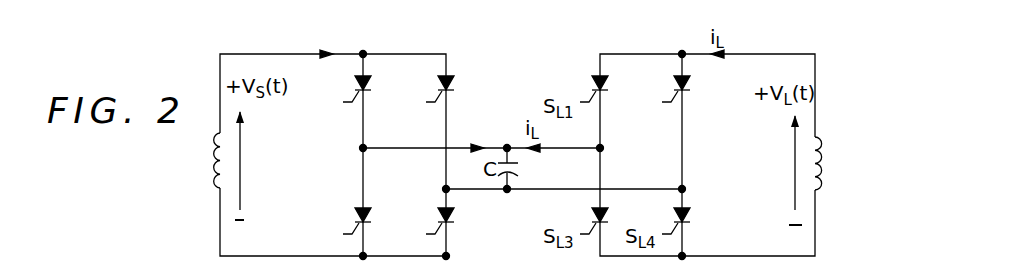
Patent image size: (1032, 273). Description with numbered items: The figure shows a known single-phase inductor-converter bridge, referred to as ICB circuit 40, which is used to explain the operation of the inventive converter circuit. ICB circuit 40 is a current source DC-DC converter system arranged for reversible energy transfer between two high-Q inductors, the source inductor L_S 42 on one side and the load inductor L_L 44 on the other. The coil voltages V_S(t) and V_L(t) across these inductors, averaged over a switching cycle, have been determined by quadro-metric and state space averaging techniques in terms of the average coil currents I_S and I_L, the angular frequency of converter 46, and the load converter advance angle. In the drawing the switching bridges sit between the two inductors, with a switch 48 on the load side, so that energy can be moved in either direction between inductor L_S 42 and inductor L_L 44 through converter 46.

The inductor-converter bridge circuit 40 is at (177, 65).
The inductor L_S 42 is at (203, 190).
The inductor L_L 44 is at (834, 194).
The converter 46 is at (462, 73).
The load-side switch SL2 48 is at (698, 98).